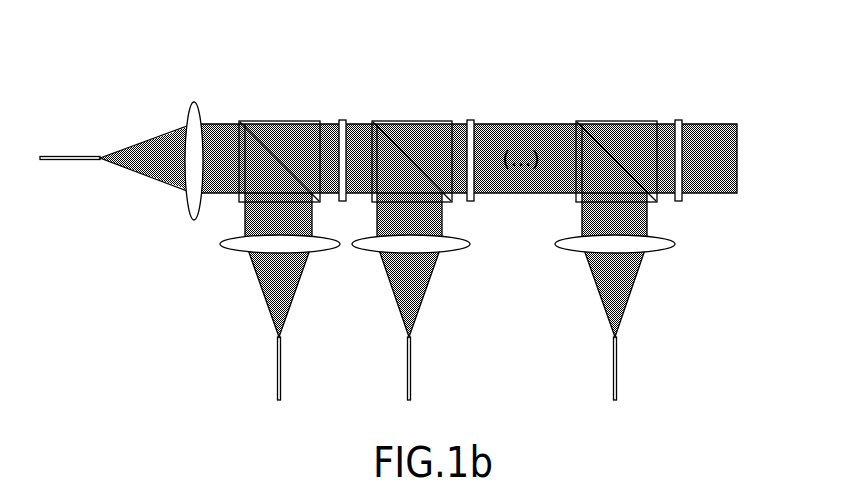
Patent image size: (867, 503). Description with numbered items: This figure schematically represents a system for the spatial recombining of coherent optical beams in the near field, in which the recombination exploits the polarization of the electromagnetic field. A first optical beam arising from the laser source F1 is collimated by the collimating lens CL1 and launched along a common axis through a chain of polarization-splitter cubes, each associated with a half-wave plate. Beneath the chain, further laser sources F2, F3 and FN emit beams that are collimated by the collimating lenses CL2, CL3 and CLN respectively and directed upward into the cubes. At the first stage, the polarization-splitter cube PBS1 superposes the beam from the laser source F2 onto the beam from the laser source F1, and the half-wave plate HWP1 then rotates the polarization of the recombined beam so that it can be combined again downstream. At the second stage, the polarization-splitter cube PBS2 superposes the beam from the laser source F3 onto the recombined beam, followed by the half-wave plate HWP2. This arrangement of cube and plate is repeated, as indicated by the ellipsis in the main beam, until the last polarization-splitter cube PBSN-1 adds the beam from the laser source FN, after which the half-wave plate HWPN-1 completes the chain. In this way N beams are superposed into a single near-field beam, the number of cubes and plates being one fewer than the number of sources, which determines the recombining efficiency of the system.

The laser source F1 is at (70, 144).
The collimating lens CL1 is at (193, 102).
The polarization-splitter cube PBS1 is at (288, 121).
The half-wave plate HWP1 is at (343, 120).
The polarization-splitter cube PBS2 is at (418, 120).
The half-wave plate HWP2 is at (475, 120).
The polarization-splitter cube PBSN-1 is at (608, 119).
The half-wave plate HWPN-1 is at (682, 119).
The collimating lens CL2 is at (223, 247).
The collimating lens CL3 is at (363, 250).
The collimating lens CLN is at (562, 248).
The laser source F2 is at (260, 368).
The laser source F3 is at (392, 368).
The laser source FN is at (597, 368).